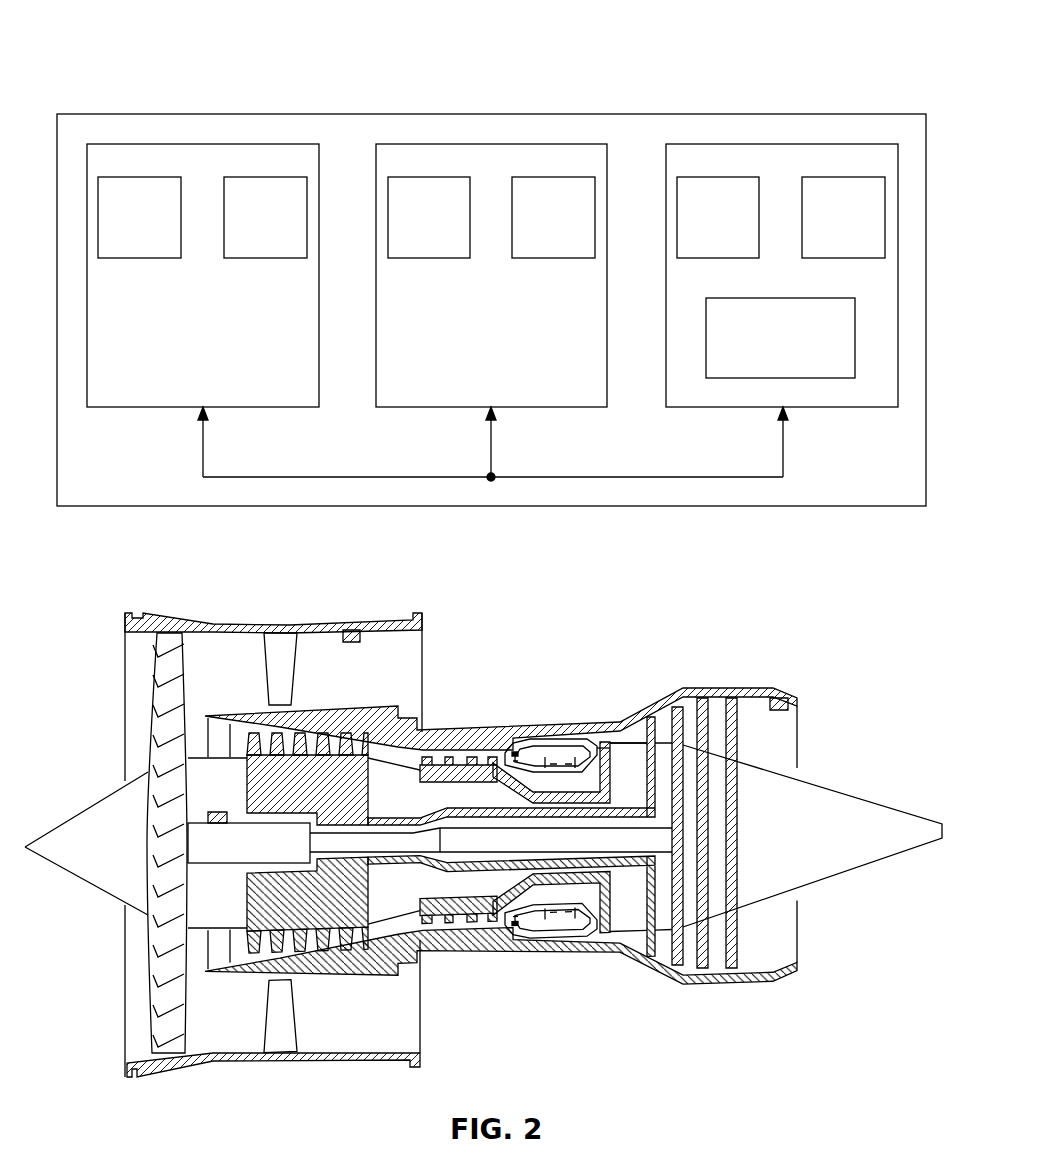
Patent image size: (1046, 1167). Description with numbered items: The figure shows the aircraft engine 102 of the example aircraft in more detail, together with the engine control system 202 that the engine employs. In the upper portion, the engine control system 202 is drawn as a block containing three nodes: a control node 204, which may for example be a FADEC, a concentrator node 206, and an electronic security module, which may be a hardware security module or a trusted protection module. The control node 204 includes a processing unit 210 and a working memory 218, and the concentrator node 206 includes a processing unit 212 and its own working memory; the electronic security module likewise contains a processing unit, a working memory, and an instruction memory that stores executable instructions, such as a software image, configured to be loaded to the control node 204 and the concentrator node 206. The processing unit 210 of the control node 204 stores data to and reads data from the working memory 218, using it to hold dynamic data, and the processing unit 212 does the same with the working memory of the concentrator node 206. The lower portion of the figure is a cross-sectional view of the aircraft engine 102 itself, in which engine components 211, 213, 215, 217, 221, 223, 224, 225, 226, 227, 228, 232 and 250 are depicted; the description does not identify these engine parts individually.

The aircraft engine 102 is at (124, 36).
The engine control system 202 is at (343, 113).
The control node 204 is at (190, 148).
The concentrator node 206 is at (483, 148).
The working memory 218 is at (290, 177).
The processing unit 210 is at (452, 177).
The processing unit 212 is at (742, 177).
The nacelle 211 is at (212, 1063).
The nacelle sensor 227 is at (352, 630).
The fan exit guide vane 215 is at (280, 640).
The fan 213 is at (168, 673).
The fan hub 224 is at (210, 908).
The hub sensor 232 is at (212, 818).
The high pressure compressor 217 is at (473, 903).
The core casing 223 is at (797, 750).
The casing sensor 228 is at (780, 700).
The combustor casing 250 is at (512, 740).
The combustor 226 is at (550, 880).
The high pressure turbine 221 is at (650, 720).
The turbine inlet 225 is at (632, 860).